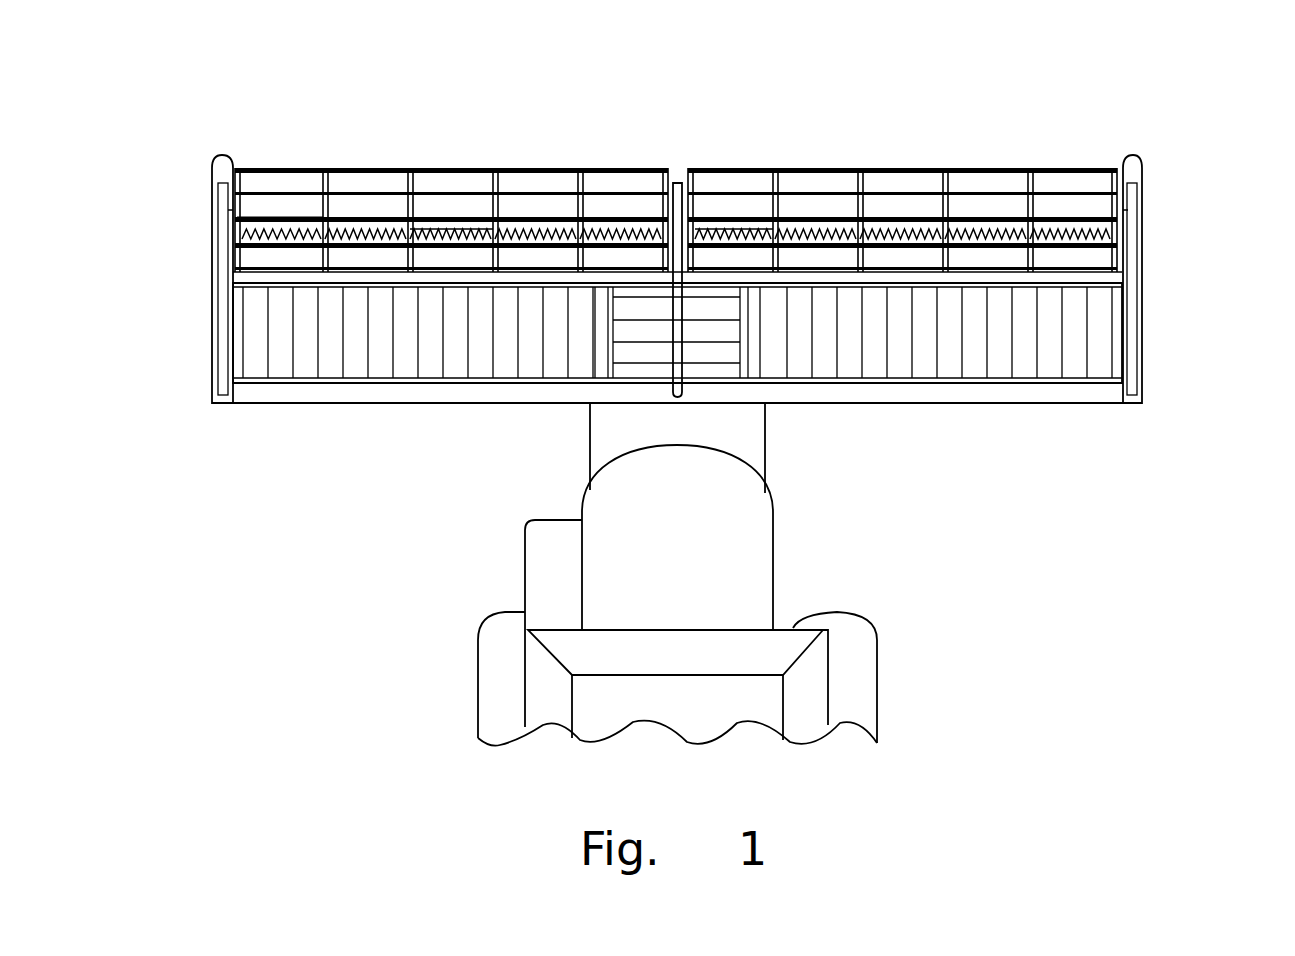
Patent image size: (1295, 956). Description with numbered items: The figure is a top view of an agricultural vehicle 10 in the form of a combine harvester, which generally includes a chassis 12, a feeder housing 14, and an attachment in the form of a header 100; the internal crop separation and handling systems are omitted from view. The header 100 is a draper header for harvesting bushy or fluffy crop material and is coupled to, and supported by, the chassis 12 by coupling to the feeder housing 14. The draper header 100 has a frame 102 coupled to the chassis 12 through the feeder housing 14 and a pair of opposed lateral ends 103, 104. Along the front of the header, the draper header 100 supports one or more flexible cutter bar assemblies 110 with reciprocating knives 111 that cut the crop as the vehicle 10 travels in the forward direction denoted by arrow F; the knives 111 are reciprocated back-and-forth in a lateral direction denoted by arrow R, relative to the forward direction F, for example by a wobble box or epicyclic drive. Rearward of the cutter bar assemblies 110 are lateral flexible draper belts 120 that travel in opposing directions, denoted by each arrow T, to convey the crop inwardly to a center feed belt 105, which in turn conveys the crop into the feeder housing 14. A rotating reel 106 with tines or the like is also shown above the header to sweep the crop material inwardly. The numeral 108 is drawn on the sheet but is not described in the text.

The agricultural vehicle 10 is at (830, 693).
The chassis 12 is at (775, 553).
The feeder housing 14 is at (758, 433).
The header 100 is at (1165, 415).
The frame 102 is at (477, 405).
The lateral end 103 is at (188, 349).
The lateral end 104 is at (1175, 338).
The center feed belt 105 is at (636, 298).
The rotating reel 106 is at (985, 168).
The auger tube 108 is at (273, 218).
The flexible cutter bar assembly 110 is at (376, 208).
The reciprocating knives 111 is at (441, 215).
The draper belts 120 is at (259, 358).
The forward direction F is at (727, 52).
The lateral direction R is at (882, 258).
The direction of travel T is at (400, 333).